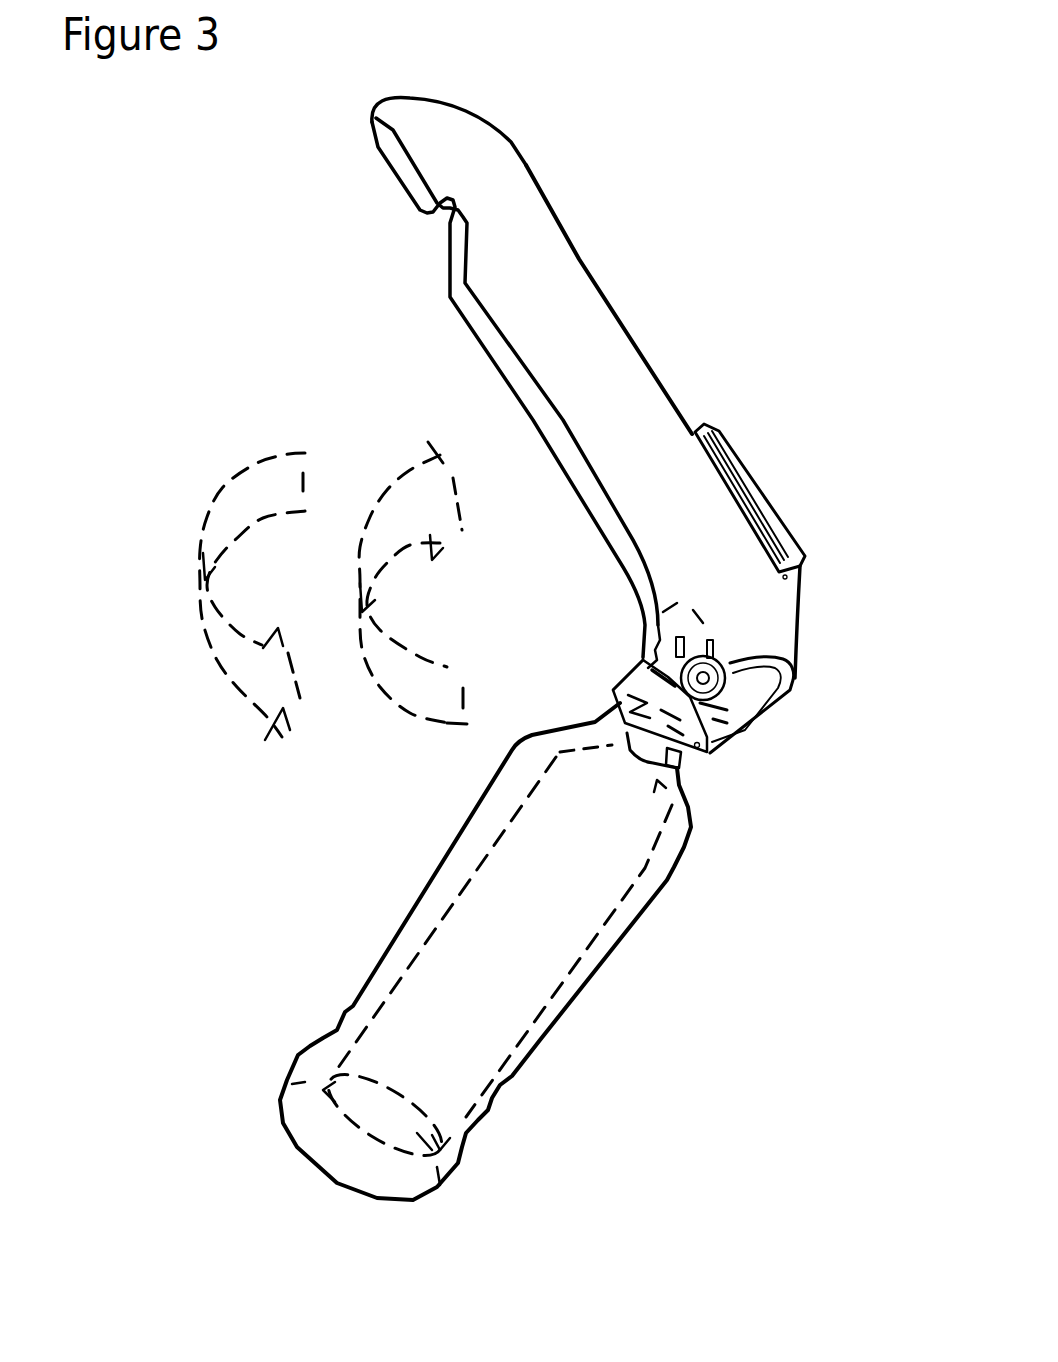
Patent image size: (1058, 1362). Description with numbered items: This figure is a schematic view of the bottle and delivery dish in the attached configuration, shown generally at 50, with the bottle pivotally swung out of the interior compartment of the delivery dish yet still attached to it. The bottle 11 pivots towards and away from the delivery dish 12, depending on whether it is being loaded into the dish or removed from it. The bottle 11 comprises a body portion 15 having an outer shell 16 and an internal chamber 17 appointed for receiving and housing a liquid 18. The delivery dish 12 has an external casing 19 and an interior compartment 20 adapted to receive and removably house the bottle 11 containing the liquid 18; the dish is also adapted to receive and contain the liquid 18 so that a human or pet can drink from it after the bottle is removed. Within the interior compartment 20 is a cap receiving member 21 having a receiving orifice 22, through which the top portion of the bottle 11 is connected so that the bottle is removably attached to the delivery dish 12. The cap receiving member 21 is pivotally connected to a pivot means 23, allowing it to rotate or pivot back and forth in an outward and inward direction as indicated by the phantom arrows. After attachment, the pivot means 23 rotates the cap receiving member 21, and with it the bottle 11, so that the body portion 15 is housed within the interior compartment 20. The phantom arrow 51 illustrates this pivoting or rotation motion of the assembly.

The bottle and delivery dish in the attached configuration 50 is at (158, 197).
The bottle 11 is at (562, 1047).
The delivery dish 12 is at (647, 357).
The body portion 15 is at (298, 1053).
The outer shell 16 is at (433, 900).
The internal chamber 17 is at (610, 840).
The liquid 18 is at (553, 950).
The external casing 19 is at (585, 265).
The interior compartment 20 is at (510, 353).
The cap receiving member 21 is at (613, 690).
The receiving orifice 22 is at (678, 767).
The pivot means 23 is at (795, 676).
The phantom arrow 51 is at (187, 583).